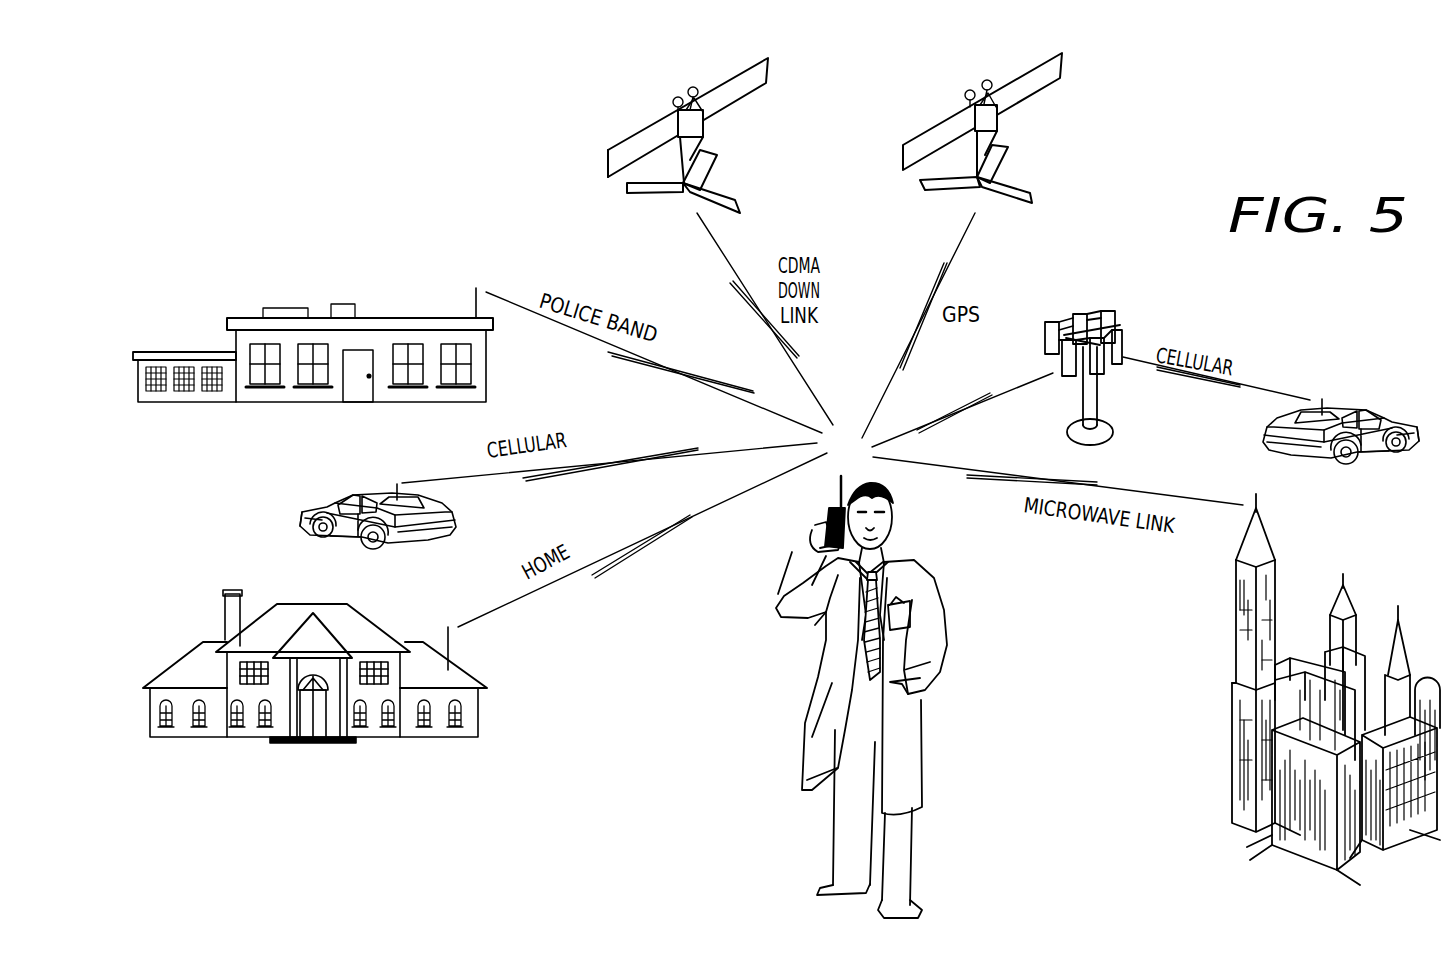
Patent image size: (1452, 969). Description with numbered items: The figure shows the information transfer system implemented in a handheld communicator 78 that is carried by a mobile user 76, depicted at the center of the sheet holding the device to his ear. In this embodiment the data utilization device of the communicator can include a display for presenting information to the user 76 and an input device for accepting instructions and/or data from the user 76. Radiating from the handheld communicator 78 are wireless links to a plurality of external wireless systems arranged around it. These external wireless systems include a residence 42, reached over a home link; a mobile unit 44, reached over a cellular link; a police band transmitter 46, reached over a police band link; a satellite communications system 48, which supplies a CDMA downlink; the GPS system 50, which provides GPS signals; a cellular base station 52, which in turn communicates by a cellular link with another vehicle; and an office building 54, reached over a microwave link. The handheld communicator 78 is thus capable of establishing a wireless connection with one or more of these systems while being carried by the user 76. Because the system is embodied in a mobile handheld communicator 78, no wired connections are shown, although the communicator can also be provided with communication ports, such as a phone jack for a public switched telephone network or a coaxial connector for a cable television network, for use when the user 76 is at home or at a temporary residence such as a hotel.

The residence 42 is at (210, 728).
The mobile unit 44 is at (361, 503).
The police band transmitter 46 is at (398, 322).
The satellite communications system 48 is at (620, 157).
The GPS system 50 is at (1020, 205).
The cellular base station 52 is at (1115, 326).
The office building 54 is at (1243, 622).
The user 76 is at (785, 583).
The handheld communicator 78 is at (827, 512).